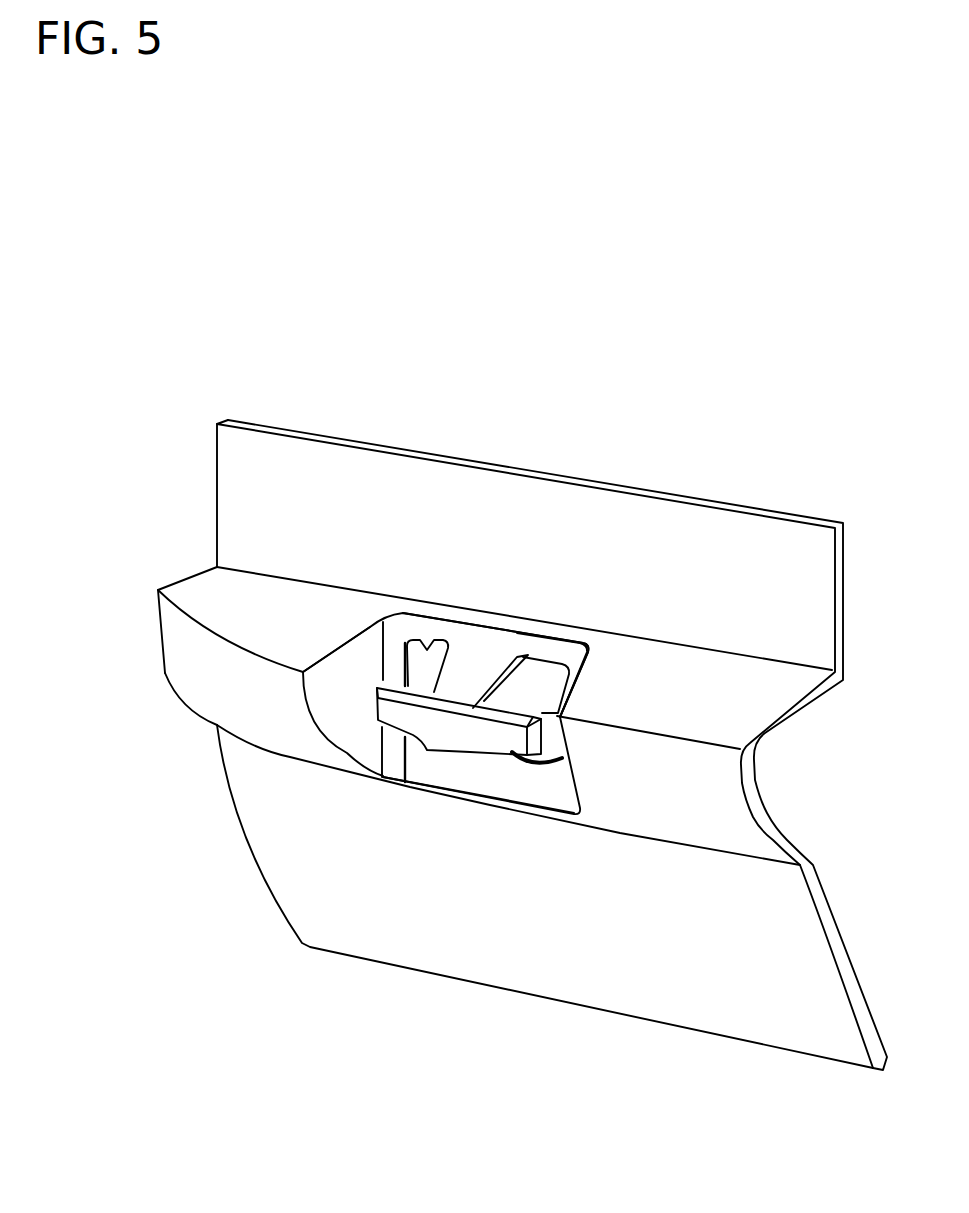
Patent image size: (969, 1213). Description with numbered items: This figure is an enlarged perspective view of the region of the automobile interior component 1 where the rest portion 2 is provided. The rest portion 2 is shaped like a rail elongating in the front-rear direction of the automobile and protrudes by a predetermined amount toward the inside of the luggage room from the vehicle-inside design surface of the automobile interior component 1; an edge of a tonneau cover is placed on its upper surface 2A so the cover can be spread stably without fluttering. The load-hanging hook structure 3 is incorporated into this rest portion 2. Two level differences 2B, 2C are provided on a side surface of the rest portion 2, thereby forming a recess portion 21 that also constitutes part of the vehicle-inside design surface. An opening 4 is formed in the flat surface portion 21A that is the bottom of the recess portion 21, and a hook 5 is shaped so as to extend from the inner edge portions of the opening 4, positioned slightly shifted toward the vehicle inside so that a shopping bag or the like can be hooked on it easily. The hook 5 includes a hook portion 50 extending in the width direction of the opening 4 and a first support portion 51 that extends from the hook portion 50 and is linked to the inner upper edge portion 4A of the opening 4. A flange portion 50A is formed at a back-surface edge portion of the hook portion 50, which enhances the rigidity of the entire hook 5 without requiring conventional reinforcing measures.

The automobile interior component 1 is at (193, 390).
The rest portion 2 is at (168, 543).
The upper surface 2A is at (712, 670).
The level difference 2B is at (360, 627).
The level difference 2C is at (587, 665).
The load-hanging hook structure 3 is at (385, 828).
The opening 4 is at (557, 653).
The inner upper edge portion 4A is at (430, 645).
The hook 5 is at (537, 691).
The recess portion 21 is at (410, 608).
The flat surface portion 21A is at (575, 628).
The hook portion 50 is at (460, 745).
The flange portion 50A is at (398, 687).
The first support portion 51 is at (472, 662).